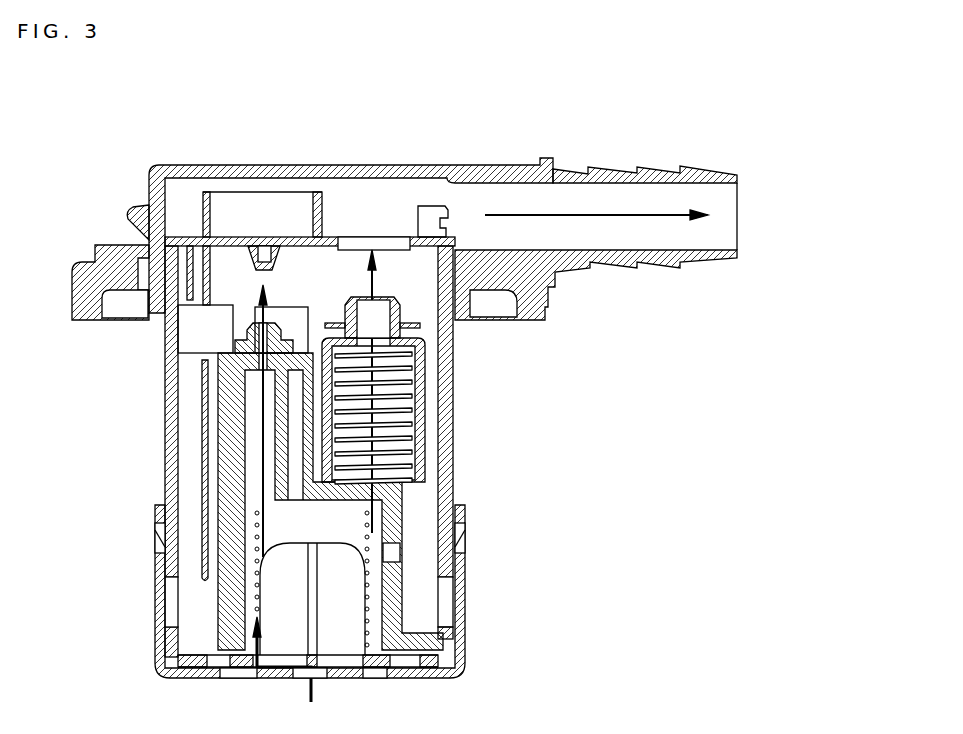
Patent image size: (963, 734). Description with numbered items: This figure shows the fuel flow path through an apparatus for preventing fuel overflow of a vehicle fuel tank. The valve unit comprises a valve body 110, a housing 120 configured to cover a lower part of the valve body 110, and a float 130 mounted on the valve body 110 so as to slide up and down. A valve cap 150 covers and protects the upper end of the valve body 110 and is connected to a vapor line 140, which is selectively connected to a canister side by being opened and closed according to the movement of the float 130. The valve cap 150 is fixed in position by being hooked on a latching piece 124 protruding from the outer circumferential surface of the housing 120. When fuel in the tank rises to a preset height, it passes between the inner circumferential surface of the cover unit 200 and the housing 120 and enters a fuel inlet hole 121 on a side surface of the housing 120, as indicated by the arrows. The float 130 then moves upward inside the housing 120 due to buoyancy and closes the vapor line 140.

The valve body 110 is at (445, 415).
The housing 120 is at (168, 422).
The fuel inlet hole 121 is at (172, 610).
The latching piece 124 is at (459, 527).
The float 130 is at (404, 317).
The vapor line 140 is at (612, 171).
The valve cap 150 is at (323, 166).
The cover unit 200 is at (462, 583).